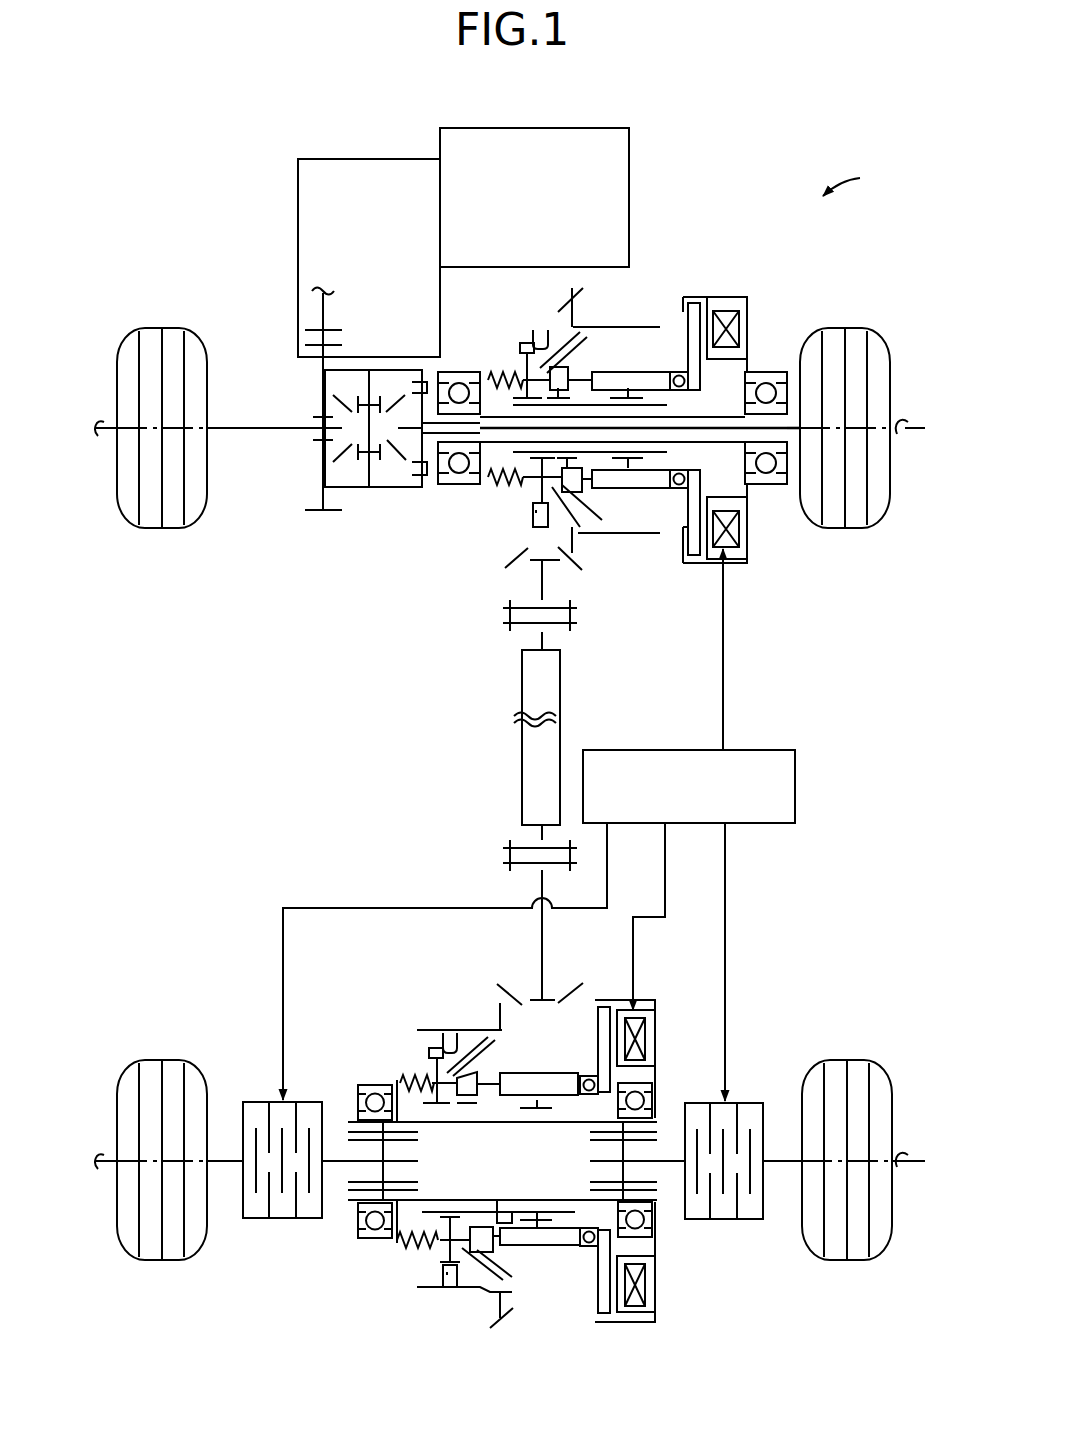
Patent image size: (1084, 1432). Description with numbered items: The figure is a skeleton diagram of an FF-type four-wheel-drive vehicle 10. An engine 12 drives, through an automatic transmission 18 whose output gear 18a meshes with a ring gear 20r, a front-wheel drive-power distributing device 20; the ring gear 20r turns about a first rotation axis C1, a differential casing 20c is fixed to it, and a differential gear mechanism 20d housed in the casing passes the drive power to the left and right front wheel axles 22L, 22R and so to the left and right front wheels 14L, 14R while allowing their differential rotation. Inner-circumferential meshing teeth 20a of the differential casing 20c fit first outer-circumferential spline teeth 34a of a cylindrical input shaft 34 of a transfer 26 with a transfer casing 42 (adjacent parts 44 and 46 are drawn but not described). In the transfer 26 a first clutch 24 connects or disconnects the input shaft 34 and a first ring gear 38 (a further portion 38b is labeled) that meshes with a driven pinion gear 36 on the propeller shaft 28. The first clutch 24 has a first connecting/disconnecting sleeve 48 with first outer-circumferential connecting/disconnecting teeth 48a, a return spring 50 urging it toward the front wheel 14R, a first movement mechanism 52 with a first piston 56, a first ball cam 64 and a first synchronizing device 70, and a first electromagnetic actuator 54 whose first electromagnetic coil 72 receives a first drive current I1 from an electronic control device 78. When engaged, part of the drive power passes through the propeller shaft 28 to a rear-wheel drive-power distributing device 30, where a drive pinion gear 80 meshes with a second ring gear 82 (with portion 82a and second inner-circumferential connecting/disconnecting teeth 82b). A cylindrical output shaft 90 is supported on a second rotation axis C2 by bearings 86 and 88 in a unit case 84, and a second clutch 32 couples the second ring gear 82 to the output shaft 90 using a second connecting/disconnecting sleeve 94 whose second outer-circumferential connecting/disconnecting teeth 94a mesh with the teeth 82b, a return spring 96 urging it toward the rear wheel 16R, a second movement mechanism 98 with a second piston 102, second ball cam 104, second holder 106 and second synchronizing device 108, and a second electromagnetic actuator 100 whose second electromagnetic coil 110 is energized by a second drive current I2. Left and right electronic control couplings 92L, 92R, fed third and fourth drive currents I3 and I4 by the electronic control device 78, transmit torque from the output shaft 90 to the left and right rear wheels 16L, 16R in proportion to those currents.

The four-wheel-drive vehicle 10 is at (856, 181).
The engine 12 is at (527, 166).
The left front wheel 14L is at (172, 348).
The right front wheel 14R is at (855, 348).
The left rear wheel 16L is at (172, 1082).
The right rear wheel 16R is at (855, 1082).
The automatic transmission 18 is at (373, 183).
The output gear 18a is at (312, 338).
The front-wheel drive-power distributing device 20 is at (342, 438).
The inner-circumferential meshing teeth 20a is at (410, 393).
The differential casing 20c is at (356, 370).
The differential gear mechanism 20d is at (346, 462).
The ring gear 20r is at (312, 522).
The left front wheel axle 22L is at (252, 424).
The right front wheel axle 22R is at (790, 426).
The first clutch 24 is at (500, 534).
The transfer 26 is at (665, 292).
The propeller shaft 28 is at (547, 720).
The rear-wheel drive-power distributing device 30 is at (356, 996).
The second clutch 32 is at (420, 1276).
The input shaft 34 is at (712, 452).
The first outer-circumferential spline teeth 34a is at (427, 485).
The driven pinion gear 36 is at (505, 562).
The first ring gear 38 is at (560, 318).
The clutch tooth 38b is at (536, 332).
The transfer casing 42 is at (700, 566).
The bearing 44 is at (457, 383).
The bearing 46 is at (764, 388).
The first connecting/disconnecting sleeve 48 is at (518, 362).
The first outer-circumferential connecting/disconnecting teeth 48a is at (523, 344).
The return spring 50 is at (490, 484).
The first movement mechanism 52 is at (636, 498).
The first electromagnetic actuator 54 is at (682, 569).
The first piston 56 is at (569, 383).
The first ball cam 64 is at (684, 389).
The first synchronizing device 70 is at (590, 350).
The first electromagnetic coil 72 is at (738, 527).
The electronic control device 78 is at (681, 758).
The drive pinion gear 80 is at (493, 992).
The second ring gear 82 is at (487, 1018).
The clutch teeth 82a is at (478, 1040).
The second inner-circumferential connecting/disconnecting teeth 82b is at (444, 1042).
The unit case 84 is at (606, 1325).
The bearing 86 is at (360, 1103).
The bearing 88 is at (652, 1100).
The output shaft 90 is at (468, 1122).
The left electronic control coupling 92L is at (268, 1232).
The right electronic control coupling 92R is at (732, 1232).
The second connecting/disconnecting sleeve 94 is at (425, 1070).
The second outer-circumferential connecting/disconnecting teeth 94a is at (429, 1053).
The return spring 96 is at (400, 1246).
The second movement mechanism 98 is at (540, 1262).
The second electromagnetic actuator 100 is at (590, 1331).
The second piston 102 is at (457, 1097).
The second ball cam 104 is at (586, 1078).
The second holder 106 is at (505, 1110).
The second synchronizing device 108 is at (503, 1056).
The second electromagnetic coil 110 is at (644, 1283).
The first drive current I1 is at (736, 649).
The second drive current I2 is at (649, 916).
The third drive current I3 is at (433, 961).
The fourth drive current I4 is at (738, 962).
The first rotation axis C1 is at (506, 453).
The second rotation axis C2 is at (506, 1185).